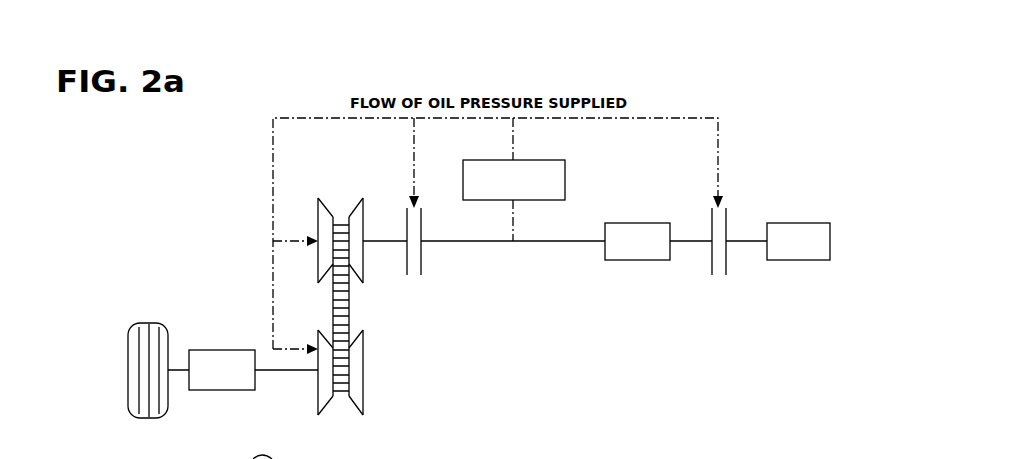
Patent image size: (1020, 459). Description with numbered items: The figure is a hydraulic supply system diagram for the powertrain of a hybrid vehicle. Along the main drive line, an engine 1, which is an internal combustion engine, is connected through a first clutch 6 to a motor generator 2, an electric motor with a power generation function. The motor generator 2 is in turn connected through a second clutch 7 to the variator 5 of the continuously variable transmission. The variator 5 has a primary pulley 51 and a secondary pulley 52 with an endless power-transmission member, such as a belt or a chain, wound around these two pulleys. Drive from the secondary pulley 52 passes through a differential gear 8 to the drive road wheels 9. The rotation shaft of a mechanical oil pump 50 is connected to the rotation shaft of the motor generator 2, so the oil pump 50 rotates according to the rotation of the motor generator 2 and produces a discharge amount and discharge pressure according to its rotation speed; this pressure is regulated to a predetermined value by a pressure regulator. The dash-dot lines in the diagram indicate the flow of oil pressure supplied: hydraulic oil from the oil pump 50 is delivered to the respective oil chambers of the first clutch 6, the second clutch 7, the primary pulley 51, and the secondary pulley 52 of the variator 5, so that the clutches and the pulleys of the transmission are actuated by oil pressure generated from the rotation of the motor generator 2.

The engine 1 is at (800, 262).
The motor generator 2 is at (638, 262).
The variator 5 is at (371, 312).
The first clutch 6 is at (718, 277).
The second clutch 7 is at (421, 265).
The differential gear 8 is at (224, 349).
The drive road wheels 9 is at (150, 322).
The mechanical oil pump 50 is at (565, 178).
The primary pulley 51 is at (366, 216).
The secondary pulley 52 is at (363, 370).